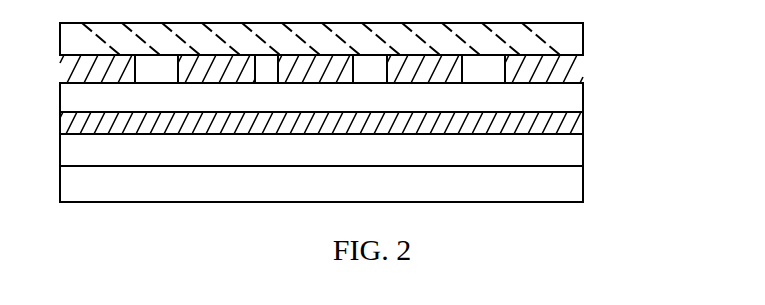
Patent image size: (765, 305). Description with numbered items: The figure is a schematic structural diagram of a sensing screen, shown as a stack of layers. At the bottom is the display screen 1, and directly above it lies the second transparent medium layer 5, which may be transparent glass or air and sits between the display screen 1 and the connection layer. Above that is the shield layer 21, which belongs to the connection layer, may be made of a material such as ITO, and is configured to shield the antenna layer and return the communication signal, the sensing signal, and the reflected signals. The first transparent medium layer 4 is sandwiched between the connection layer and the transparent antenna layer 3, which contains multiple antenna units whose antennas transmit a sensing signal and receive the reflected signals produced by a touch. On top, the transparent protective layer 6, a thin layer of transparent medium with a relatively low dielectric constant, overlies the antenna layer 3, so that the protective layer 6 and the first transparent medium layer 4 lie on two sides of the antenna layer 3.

The transparent protective layer 6 is at (585, 36).
The transparent antenna layer 3 is at (585, 64).
The first transparent medium layer 4 is at (585, 92).
The shield layer 21 is at (585, 124).
The second transparent medium layer 5 is at (585, 157).
The display screen 1 is at (585, 187).